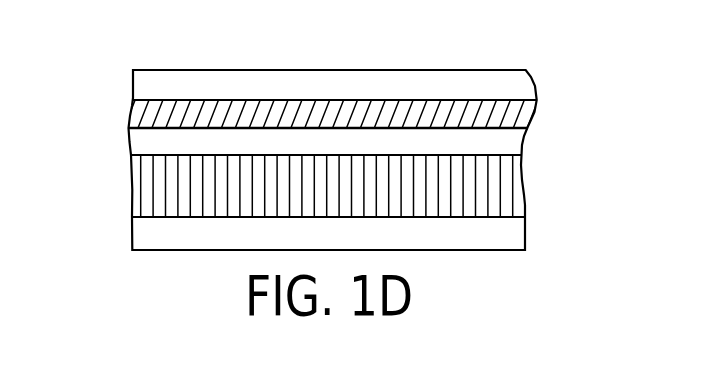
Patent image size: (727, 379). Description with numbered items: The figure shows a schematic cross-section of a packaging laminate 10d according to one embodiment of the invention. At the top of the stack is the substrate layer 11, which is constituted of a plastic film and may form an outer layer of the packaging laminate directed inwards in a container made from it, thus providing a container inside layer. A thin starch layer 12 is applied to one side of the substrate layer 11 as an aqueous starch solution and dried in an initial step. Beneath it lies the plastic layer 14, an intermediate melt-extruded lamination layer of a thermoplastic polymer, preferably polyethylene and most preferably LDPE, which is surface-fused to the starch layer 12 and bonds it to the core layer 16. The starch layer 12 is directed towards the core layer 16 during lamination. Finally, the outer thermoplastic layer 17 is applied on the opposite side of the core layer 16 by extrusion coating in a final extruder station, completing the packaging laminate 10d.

The packaging laminate 10d is at (284, 160).
The substrate layer 11 is at (503, 87).
The starch layer 12 is at (505, 112).
The plastic layer 14 is at (505, 138).
The core layer 16 is at (503, 182).
The outer thermoplastic layer 17 is at (503, 228).